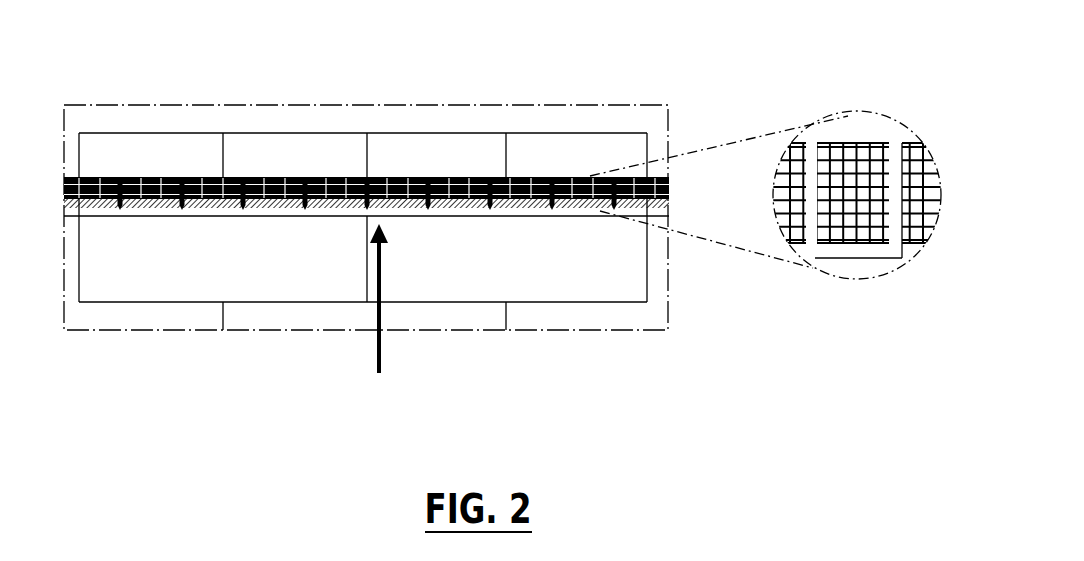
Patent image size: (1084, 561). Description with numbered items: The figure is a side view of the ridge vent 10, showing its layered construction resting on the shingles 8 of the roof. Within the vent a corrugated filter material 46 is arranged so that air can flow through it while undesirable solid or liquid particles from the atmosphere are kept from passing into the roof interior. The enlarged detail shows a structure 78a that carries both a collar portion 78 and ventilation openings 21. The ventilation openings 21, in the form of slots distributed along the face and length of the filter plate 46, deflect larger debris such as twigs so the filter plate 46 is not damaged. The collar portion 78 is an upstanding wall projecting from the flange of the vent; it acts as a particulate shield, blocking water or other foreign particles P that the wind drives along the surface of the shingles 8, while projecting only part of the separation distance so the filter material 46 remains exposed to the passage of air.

The ridge vent 10 is at (160, 350).
The shingles 8 is at (428, 152).
The ventilation openings 21 is at (233, 178).
The corrugated filter material 46 is at (857, 143).
The collar portion 78 is at (866, 258).
The structure 78a is at (815, 217).
The foreign particles P is at (363, 304).